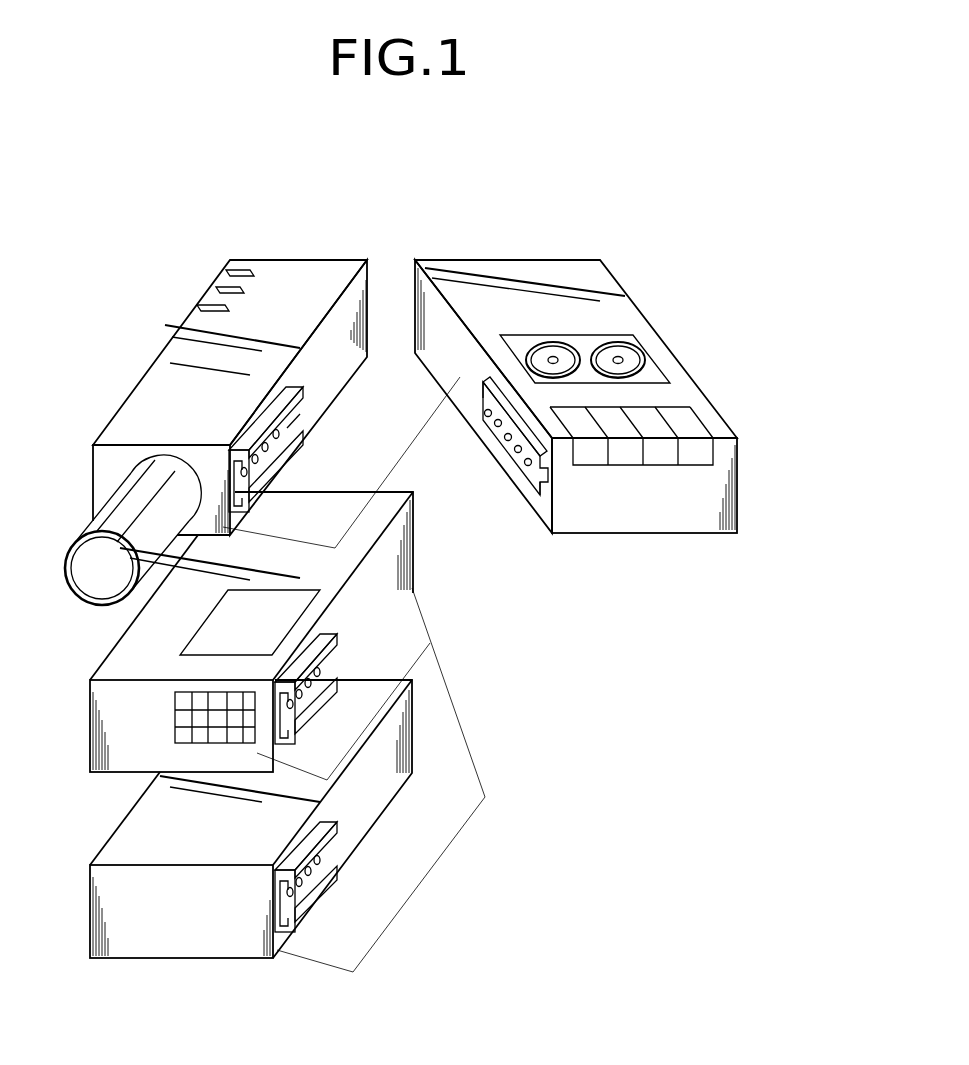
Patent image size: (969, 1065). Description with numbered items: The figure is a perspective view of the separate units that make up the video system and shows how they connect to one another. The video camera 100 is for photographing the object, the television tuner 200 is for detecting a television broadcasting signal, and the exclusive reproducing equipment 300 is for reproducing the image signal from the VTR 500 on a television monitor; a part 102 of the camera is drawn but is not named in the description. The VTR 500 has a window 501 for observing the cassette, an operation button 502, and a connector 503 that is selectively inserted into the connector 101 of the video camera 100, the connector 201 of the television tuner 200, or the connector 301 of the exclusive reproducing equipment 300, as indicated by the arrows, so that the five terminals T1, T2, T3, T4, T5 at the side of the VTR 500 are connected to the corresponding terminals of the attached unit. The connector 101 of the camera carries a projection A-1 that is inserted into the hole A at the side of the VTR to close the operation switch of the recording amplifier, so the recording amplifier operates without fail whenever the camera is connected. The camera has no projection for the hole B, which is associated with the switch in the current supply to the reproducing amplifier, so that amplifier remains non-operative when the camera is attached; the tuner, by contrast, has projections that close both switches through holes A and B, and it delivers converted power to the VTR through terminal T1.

The video camera 100 is at (343, 262).
The connector 101 is at (298, 447).
The lens barrel 102 is at (132, 512).
The television tuner 200 is at (92, 722).
The connector 201 is at (330, 650).
The exclusive reproducing equipment 300 is at (95, 909).
The connector 301 is at (323, 890).
The VTR 500 is at (604, 275).
The window 501 is at (653, 353).
The operation button 502 is at (643, 420).
The connector 503 is at (533, 513).
The hole A is at (500, 412).
The projection A-1 is at (287, 428).
The hole B is at (536, 483).
The connector terminal T1 is at (485, 414).
The connector terminal T2 is at (496, 426).
The connector terminal T3 is at (507, 441).
The connector terminal T4 is at (518, 453).
The connector terminal T5 is at (528, 466).